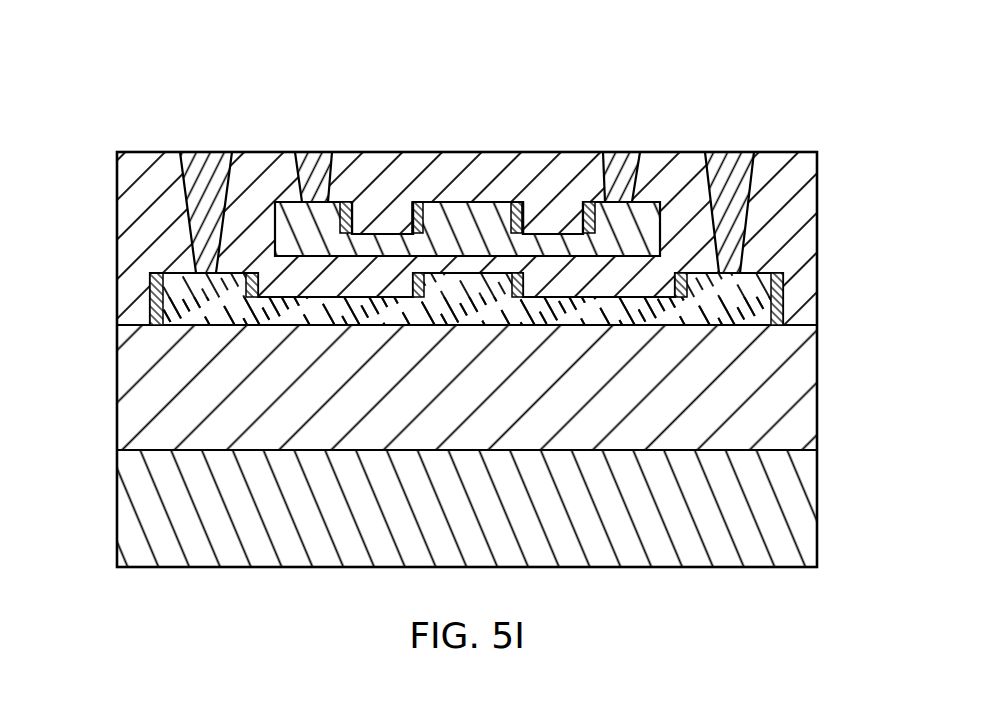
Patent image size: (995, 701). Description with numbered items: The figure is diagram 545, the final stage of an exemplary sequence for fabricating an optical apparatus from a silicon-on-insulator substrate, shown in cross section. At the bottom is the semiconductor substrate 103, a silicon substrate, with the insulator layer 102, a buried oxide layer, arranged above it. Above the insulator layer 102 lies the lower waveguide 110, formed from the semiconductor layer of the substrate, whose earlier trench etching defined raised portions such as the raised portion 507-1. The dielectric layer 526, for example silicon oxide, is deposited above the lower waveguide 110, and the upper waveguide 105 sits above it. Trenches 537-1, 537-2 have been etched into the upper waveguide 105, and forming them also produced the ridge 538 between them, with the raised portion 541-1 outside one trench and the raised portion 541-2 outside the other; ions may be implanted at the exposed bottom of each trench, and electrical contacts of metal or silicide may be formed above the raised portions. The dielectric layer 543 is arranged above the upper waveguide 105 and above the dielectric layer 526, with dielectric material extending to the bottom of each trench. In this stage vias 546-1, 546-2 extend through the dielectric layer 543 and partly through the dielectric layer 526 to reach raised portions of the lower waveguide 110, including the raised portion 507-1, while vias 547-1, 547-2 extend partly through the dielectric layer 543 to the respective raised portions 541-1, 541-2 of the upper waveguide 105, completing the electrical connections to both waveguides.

The diagram 545 is at (864, 82).
The dielectric layer 543 is at (805, 190).
The upper waveguide 105 is at (577, 245).
The dielectric layer 526 is at (800, 282).
The lower waveguide 110 is at (613, 310).
The insulator layer 102 is at (817, 408).
The semiconductor substrate 103 is at (817, 490).
The raised portion 507-1 is at (179, 272).
The trench 537-1 is at (389, 194).
The trench 537-2 is at (548, 202).
The ridge 538 is at (471, 184).
The raised portion 541-1 is at (280, 202).
The raised portion 541-2 is at (647, 202).
The via 546-1 is at (205, 162).
The via 546-2 is at (734, 162).
The via 547-1 is at (322, 160).
The via 547-2 is at (622, 160).